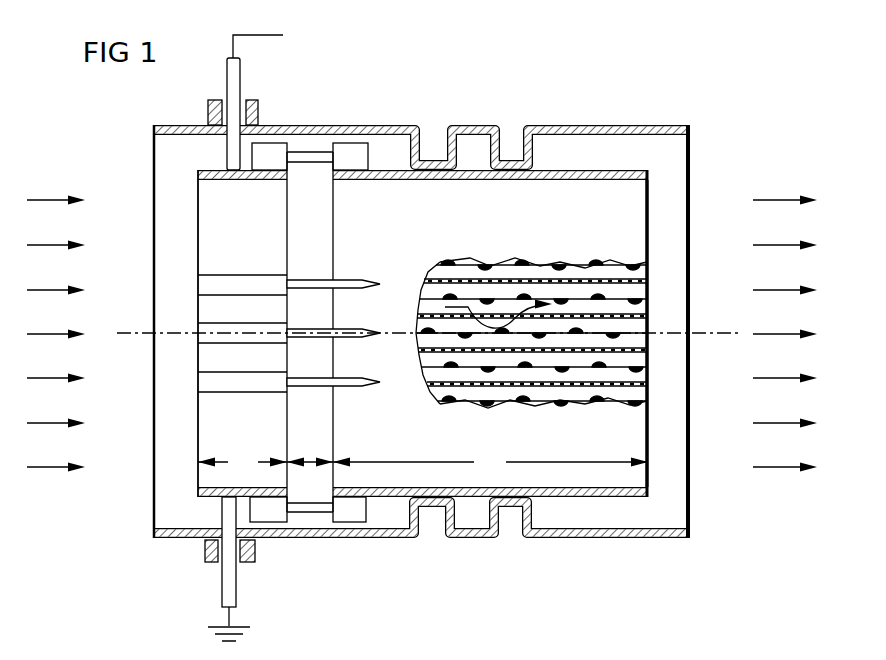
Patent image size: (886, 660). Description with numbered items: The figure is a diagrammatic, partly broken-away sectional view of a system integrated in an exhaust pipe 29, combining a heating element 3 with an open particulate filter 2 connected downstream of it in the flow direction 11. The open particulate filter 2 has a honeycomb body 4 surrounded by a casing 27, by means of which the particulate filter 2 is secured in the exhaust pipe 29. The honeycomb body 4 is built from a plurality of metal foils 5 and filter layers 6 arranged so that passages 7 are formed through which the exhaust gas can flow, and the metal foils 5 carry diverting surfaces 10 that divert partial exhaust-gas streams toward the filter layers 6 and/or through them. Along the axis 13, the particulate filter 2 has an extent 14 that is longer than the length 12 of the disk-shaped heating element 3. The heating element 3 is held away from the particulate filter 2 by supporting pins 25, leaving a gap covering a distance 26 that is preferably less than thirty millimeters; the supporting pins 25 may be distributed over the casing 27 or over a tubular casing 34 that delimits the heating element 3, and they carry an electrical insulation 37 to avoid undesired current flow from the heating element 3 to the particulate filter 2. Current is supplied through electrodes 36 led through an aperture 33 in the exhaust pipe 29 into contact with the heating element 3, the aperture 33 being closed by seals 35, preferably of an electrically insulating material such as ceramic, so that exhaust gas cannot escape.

The open particulate filter 2 is at (626, 434).
The heating element 3 is at (214, 432).
The honeycomb body 4 is at (634, 228).
The metal foils 5 is at (520, 367).
The filter layers 6 is at (460, 394).
The passages 7 is at (455, 392).
The diverting surfaces 10 is at (567, 367).
The flow direction 11 is at (52, 198).
The length 12 is at (242, 461).
The axis 13 is at (132, 333).
The extent 14 is at (490, 461).
The supporting pins 25 is at (305, 162).
The distance 26 is at (310, 460).
The casing 27 is at (617, 497).
The exhaust pipe 29 is at (630, 125).
The aperture 33 is at (222, 100).
The tubular casing 34 is at (246, 180).
The seals 35 is at (208, 112).
The electrodes 36 is at (240, 80).
The electrical insulation 37 is at (350, 152).